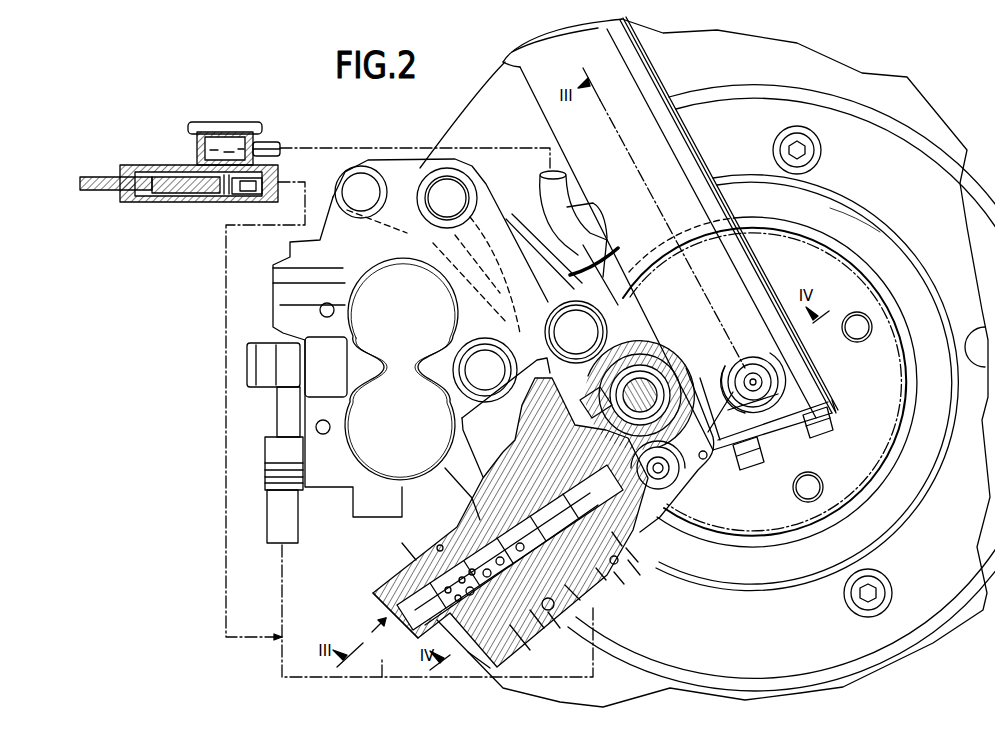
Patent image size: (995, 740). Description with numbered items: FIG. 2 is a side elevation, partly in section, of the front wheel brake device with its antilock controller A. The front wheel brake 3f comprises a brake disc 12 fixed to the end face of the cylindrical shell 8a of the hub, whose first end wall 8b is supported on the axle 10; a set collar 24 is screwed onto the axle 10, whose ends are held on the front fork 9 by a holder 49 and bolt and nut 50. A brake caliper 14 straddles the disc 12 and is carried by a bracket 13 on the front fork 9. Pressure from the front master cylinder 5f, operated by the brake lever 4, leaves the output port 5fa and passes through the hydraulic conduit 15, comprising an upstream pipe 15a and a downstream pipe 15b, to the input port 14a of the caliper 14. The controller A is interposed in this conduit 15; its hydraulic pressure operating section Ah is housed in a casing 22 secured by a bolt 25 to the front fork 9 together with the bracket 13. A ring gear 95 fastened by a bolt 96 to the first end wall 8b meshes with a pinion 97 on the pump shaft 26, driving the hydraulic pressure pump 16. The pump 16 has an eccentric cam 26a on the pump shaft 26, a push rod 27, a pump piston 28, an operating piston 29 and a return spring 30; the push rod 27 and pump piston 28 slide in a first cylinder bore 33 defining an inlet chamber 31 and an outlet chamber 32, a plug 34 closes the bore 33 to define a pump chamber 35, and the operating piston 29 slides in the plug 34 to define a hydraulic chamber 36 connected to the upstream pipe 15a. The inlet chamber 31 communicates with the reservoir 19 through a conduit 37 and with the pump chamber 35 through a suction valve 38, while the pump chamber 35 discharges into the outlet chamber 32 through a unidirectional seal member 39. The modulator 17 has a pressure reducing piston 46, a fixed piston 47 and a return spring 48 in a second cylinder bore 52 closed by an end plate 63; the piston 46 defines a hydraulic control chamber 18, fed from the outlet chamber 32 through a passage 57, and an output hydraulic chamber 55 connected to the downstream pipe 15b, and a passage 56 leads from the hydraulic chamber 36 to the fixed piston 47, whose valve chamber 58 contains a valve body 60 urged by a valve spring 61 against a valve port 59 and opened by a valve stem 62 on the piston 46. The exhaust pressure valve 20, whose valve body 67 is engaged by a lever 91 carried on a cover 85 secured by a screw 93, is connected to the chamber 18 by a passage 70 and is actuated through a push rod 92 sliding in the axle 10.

The brake lever 4 is at (104, 178).
The front master cylinder 5f is at (152, 168).
The reservoir 19 is at (197, 153).
The output port 5fa is at (276, 184).
The front wheel brake 3f is at (328, 220).
The brake caliper 14 is at (300, 248).
The input port 14a is at (336, 344).
The hydraulic conduit 15 is at (225, 350).
The upstream pipe 15a is at (225, 455).
The downstream pipe 15b is at (384, 647).
The brake disc 12 is at (466, 118).
The front fork 9 is at (654, 72).
The conduit 37 is at (545, 194).
The bracket 13 is at (549, 272).
The bolt 25 is at (559, 323).
The antilock controller A is at (855, 223).
The first end wall 8b is at (886, 243).
The cylindrical shell 8a is at (913, 258).
The ring gear 95 is at (883, 287).
The bolt 96 is at (860, 341).
The holder 49 is at (826, 383).
The bolt and nut 50 is at (820, 430).
The axle 10 is at (752, 367).
The set collar 24 is at (766, 367).
The push rod 92 is at (770, 382).
The lever 91 is at (713, 428).
The cover 85 is at (745, 422).
The eccentric cam 26a is at (646, 377).
The pump shaft 26 is at (681, 388).
The pinion 97 is at (676, 398).
The push rod 27 is at (592, 416).
The valve body 67 is at (683, 481).
The exhaust pressure valve 20 is at (670, 491).
The passage 70 is at (632, 556).
The hydraulic control chamber 18 is at (618, 539).
The return spring 48 is at (636, 569).
The second cylinder bore 52 is at (617, 563).
The pressure reducing piston 46 is at (600, 574).
The screw 93 is at (620, 579).
The output hydraulic chamber 55 is at (572, 591).
The hydraulic pressure pump 16 is at (522, 472).
The outlet chamber 32 is at (505, 481).
The inlet chamber 31 is at (522, 463).
The pump piston 28 is at (527, 483).
The unidirectional seal member 39 is at (492, 494).
The first cylinder bore 33 is at (462, 508).
The suction valve 38 is at (472, 511).
The operating piston 29 is at (448, 528).
The pump chamber 35 is at (458, 528).
The hydraulic chamber 36 is at (440, 546).
The hydraulic pressure operating section Ah is at (404, 548).
The casing 22 is at (397, 573).
The plug 34 is at (373, 595).
The return spring 30 is at (562, 509).
The passage 57 is at (550, 523).
The valve stem 62 is at (521, 546).
The valve body 60 is at (501, 561).
The valve spring 61 is at (488, 573).
The passage 56 is at (471, 590).
The valve port 59 is at (554, 605).
The valve chamber 58 is at (537, 619).
The modulator 17 is at (553, 617).
The fixed piston 47 is at (528, 635).
The end plate 63 is at (478, 656).